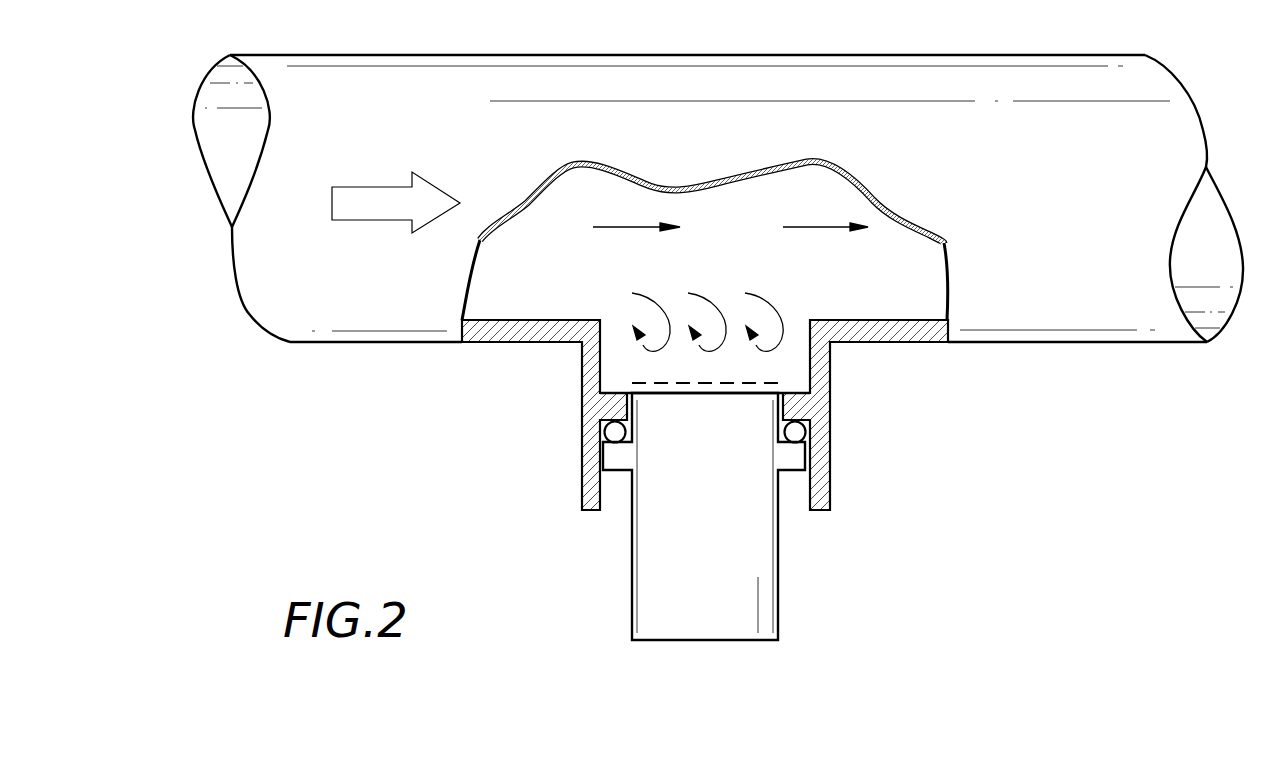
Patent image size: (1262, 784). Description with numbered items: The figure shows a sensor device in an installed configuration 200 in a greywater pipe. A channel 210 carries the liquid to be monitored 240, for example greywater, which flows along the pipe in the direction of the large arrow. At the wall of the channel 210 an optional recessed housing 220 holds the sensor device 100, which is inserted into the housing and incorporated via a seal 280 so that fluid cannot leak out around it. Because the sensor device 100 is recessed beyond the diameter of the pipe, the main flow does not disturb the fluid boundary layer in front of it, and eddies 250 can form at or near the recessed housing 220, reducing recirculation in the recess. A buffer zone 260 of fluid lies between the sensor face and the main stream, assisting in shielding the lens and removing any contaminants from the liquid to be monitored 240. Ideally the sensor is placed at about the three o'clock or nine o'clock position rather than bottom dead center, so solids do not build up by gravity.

The sensor device 100 is at (728, 610).
The installed configuration 200 is at (440, 378).
The channel 210 is at (297, 294).
The recessed housing 220 is at (593, 510).
The liquid to be monitored 240 is at (353, 193).
The eddies 250 is at (745, 293).
The buffer zone 260 is at (768, 382).
The seal 280 is at (812, 440).